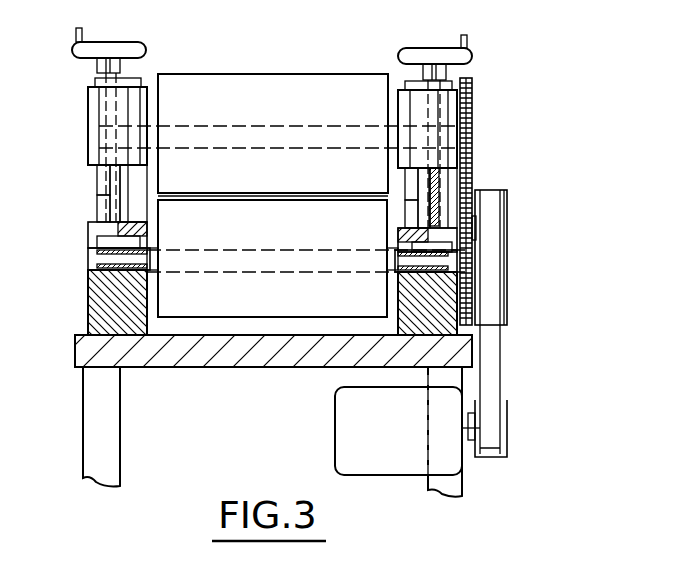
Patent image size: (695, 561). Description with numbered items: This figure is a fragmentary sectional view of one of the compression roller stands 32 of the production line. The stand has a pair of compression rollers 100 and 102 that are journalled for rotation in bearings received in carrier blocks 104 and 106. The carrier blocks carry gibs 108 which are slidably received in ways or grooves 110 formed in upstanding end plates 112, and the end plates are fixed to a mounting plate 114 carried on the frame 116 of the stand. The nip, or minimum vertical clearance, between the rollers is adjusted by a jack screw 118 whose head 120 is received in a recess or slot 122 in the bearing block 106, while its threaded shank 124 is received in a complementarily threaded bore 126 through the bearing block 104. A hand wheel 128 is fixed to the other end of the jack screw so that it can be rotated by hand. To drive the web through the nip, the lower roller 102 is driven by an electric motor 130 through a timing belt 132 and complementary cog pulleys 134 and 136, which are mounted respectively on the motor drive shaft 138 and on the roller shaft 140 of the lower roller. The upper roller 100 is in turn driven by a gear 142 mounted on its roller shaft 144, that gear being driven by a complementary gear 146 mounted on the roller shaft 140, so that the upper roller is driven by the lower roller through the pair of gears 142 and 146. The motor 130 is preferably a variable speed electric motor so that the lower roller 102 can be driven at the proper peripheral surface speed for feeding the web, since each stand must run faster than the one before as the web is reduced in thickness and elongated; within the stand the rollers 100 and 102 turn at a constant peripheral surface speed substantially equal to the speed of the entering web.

The compression roller stand 32 is at (586, 128).
The upper compression roller 100 is at (252, 73).
The lower compression roller 102 is at (285, 304).
The carrier block 104 is at (88, 88).
The carrier block 106 is at (90, 290).
The gib 108 is at (110, 115).
The way or groove 110 is at (120, 200).
The upstanding end plate 112 is at (95, 207).
The mounting plate 114 is at (250, 375).
The frame 116 is at (83, 422).
The jack screw 118 is at (97, 180).
The head 120 is at (147, 230).
The recess or slot 122 is at (96, 237).
The threaded shank 124 is at (108, 198).
The threaded bore 126 is at (138, 76).
The hand wheel 128 is at (127, 43).
The electric motor 130 is at (347, 421).
The timing belt 132 is at (498, 357).
The cog pulley 134 is at (508, 415).
The cog pulley 136 is at (510, 306).
The motor drive shaft 138 is at (478, 428).
The roller shaft 140 is at (464, 265).
The gear 142 is at (469, 108).
The roller shaft 144 is at (472, 140).
The complementary gear 146 is at (470, 224).